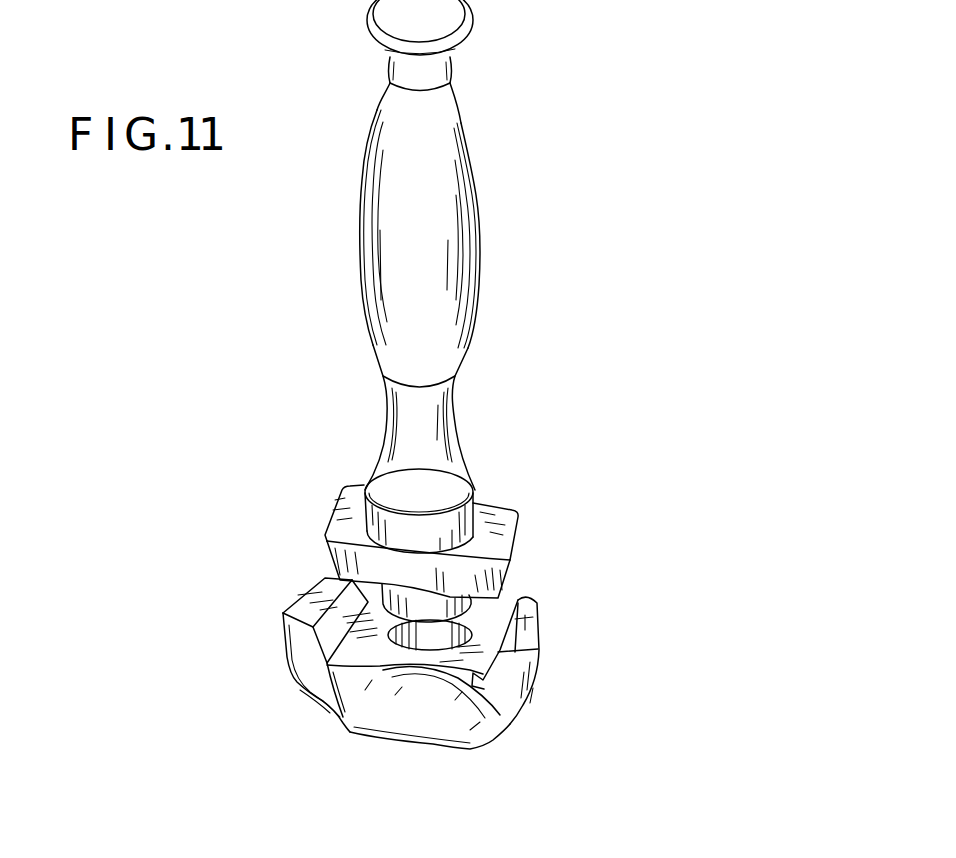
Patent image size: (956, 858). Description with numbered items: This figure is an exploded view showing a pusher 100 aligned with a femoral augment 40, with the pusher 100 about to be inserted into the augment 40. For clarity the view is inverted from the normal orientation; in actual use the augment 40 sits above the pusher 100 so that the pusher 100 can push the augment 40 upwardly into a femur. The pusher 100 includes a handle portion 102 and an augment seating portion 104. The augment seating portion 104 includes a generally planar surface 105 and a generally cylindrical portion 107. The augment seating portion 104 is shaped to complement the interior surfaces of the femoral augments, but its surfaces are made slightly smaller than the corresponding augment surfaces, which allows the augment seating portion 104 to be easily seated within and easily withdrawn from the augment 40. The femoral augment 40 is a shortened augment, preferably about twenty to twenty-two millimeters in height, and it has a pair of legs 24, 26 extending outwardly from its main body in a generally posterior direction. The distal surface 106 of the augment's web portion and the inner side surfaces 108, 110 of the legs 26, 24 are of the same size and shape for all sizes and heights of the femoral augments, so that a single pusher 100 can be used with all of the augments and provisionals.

The pusher 100 is at (530, 262).
The handle portion 102 is at (387, 245).
The augment seating portion 104 is at (548, 540).
The generally planar surface 105 is at (350, 588).
The generally cylindrical portion 107 is at (416, 600).
The femoral augment 40 is at (568, 673).
The leg 24 is at (537, 603).
The leg 26 is at (295, 607).
The inner side surface 108 is at (326, 624).
The distal surface 106 is at (338, 703).
The inner side surface 110 is at (478, 680).